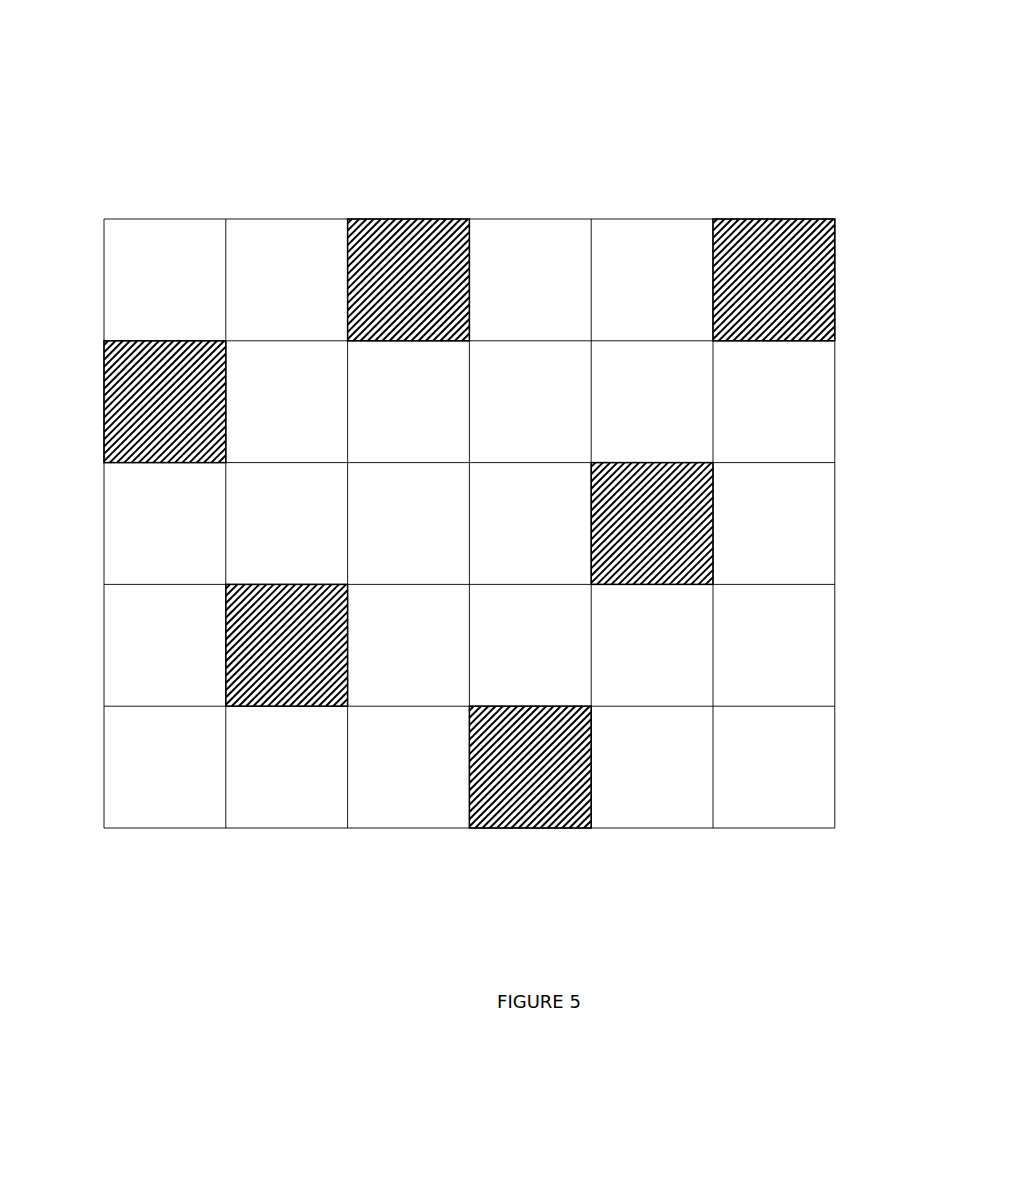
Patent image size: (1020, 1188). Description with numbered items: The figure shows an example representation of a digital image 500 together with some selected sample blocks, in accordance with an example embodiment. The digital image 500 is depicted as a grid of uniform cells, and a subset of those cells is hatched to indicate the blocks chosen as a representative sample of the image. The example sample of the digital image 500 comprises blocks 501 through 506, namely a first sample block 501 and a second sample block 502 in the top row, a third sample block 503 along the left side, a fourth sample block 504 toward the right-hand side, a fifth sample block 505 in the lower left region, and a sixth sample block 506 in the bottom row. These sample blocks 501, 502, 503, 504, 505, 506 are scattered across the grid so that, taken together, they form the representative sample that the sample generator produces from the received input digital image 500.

The digital image 500 is at (773, 70).
The sample block 501 is at (413, 273).
The sample block 502 is at (762, 258).
The sample block 503 is at (168, 382).
The sample block 504 is at (670, 517).
The sample block 505 is at (293, 645).
The sample block 506 is at (547, 808).